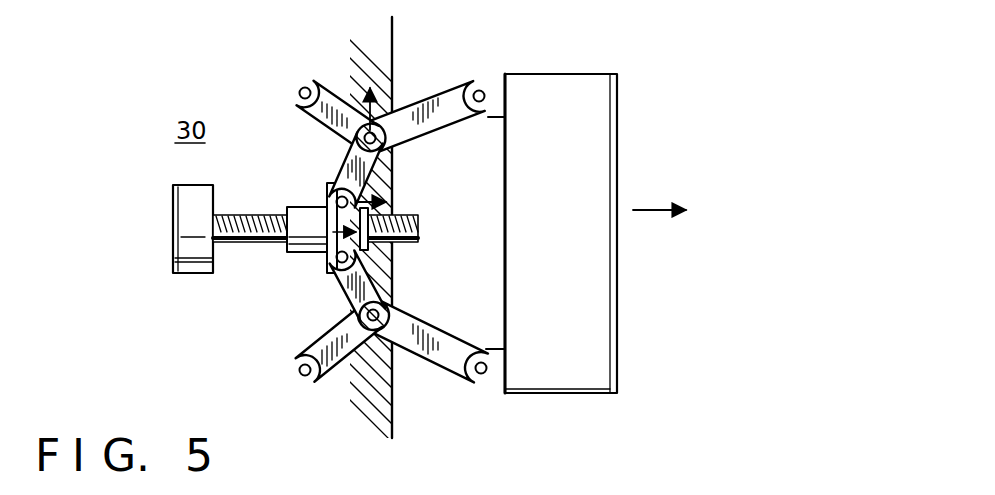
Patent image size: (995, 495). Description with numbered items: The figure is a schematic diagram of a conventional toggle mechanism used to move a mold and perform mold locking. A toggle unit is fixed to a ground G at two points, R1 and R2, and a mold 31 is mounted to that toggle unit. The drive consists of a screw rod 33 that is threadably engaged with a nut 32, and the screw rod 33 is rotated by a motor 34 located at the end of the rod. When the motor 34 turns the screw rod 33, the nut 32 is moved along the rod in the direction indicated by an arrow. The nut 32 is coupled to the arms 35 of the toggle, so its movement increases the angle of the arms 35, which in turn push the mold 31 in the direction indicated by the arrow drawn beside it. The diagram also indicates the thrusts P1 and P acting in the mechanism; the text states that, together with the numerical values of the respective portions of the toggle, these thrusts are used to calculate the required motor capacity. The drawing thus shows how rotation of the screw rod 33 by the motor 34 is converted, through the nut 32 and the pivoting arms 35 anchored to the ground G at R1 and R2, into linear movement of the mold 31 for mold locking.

The mold 31 is at (598, 114).
The nut 32 is at (299, 254).
The screw rod 33 is at (250, 214).
The motor 34 is at (190, 274).
The arms 35 is at (470, 124).
The fixing point R1 is at (299, 94).
The fixing point R2 is at (299, 370).
The thrust P is at (398, 106).
The thrust P1 is at (383, 189).
The force Q is at (659, 193).
The ground G is at (392, 420).